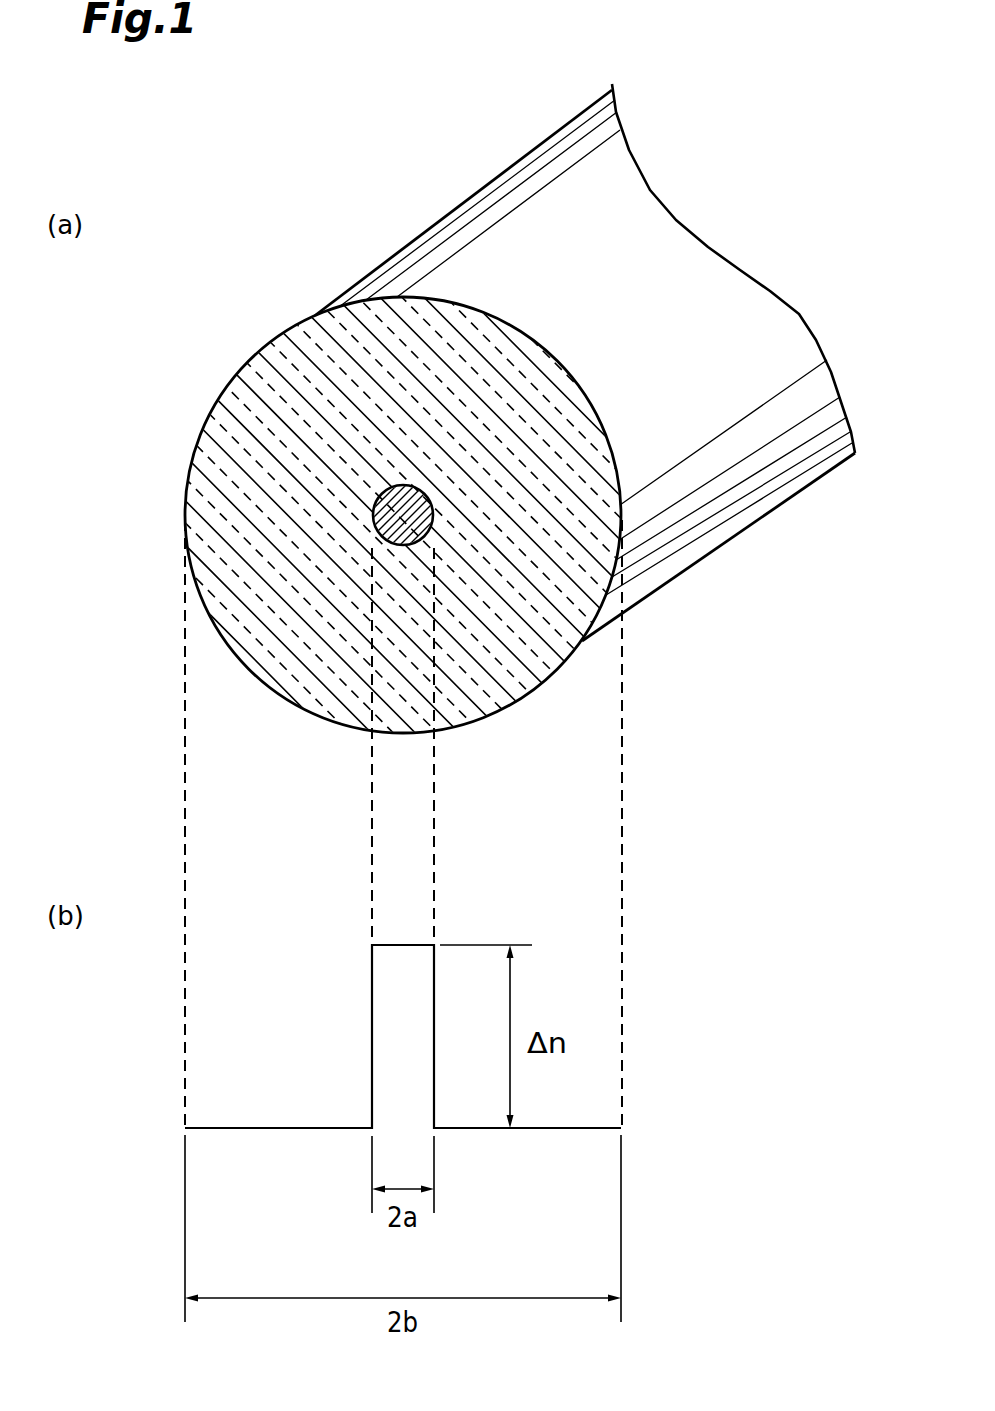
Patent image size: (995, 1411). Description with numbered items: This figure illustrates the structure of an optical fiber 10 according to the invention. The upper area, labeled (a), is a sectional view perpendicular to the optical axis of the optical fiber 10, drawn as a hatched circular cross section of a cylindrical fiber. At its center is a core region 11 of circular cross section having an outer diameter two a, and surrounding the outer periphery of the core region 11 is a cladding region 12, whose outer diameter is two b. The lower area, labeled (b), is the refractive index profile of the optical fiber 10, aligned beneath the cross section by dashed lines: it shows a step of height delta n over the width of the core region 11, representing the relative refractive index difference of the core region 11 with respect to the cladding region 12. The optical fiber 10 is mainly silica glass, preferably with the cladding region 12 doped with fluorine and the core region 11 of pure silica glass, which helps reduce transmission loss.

The optical fiber 10 is at (571, 318).
The core region 11 is at (423, 488).
The cladding region 12 is at (600, 523).